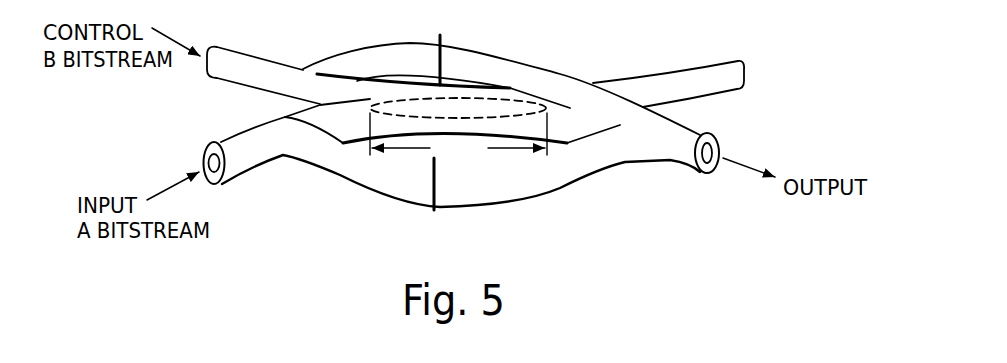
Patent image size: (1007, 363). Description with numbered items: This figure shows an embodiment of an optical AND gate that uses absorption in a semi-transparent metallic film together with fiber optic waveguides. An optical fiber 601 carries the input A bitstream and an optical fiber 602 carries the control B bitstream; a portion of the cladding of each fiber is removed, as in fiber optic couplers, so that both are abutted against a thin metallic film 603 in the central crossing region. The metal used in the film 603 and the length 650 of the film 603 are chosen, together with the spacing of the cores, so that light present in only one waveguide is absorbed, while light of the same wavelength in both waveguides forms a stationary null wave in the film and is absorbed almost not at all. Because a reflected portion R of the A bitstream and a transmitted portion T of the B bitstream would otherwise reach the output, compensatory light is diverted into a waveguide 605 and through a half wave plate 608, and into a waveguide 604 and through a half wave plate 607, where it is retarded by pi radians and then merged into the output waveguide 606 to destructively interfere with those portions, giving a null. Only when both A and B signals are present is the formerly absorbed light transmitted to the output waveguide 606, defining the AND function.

The optical fiber 601 is at (240, 174).
The optical fiber 602 is at (272, 63).
The thin metallic film 603 is at (388, 103).
The waveguide 604 is at (540, 69).
The waveguide 605 is at (540, 198).
The output waveguide 606 is at (664, 166).
The half wave plate 607 is at (442, 35).
The half wave plate 608 is at (434, 207).
The length of the metal film 650 is at (458, 138).